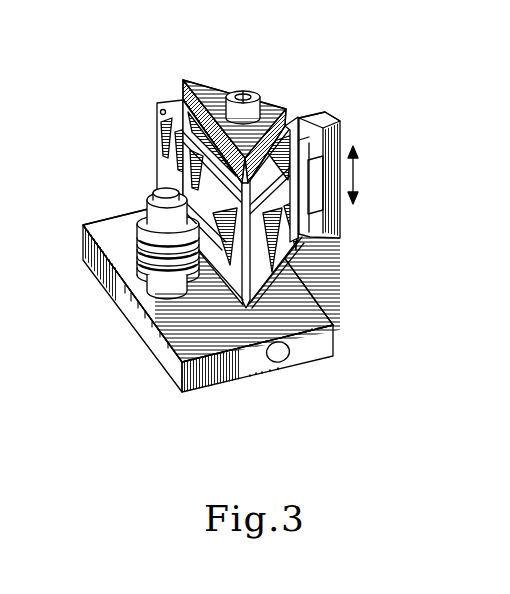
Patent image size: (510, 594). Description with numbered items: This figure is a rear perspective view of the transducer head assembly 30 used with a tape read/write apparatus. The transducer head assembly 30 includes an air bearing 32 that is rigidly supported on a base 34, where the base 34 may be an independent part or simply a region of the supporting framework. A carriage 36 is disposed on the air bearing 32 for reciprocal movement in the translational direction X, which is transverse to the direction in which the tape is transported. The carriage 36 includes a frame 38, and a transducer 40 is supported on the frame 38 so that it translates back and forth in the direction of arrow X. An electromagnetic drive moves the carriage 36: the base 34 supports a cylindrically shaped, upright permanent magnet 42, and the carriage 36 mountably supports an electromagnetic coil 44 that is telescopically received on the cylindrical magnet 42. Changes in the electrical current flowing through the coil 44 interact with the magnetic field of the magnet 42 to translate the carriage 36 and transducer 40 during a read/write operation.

The transducer head assembly 30 is at (210, 204).
The air bearing 32 is at (180, 98).
The base 34 is at (117, 232).
The carriage 36 is at (226, 204).
The frame 38 is at (153, 118).
The transducer 40 is at (322, 102).
The permanent magnet 42 is at (138, 200).
The electromagnetic coil 44 is at (142, 262).